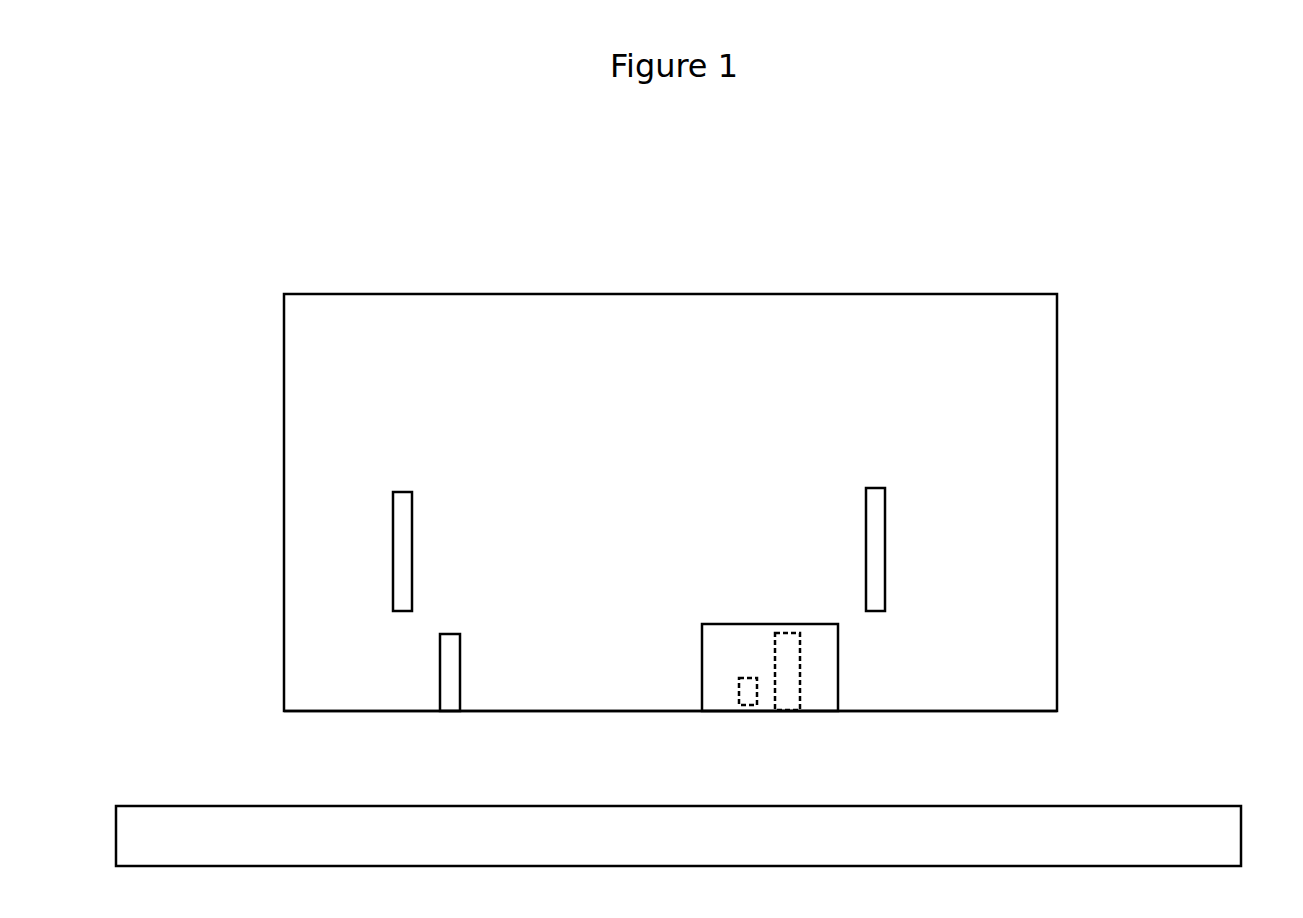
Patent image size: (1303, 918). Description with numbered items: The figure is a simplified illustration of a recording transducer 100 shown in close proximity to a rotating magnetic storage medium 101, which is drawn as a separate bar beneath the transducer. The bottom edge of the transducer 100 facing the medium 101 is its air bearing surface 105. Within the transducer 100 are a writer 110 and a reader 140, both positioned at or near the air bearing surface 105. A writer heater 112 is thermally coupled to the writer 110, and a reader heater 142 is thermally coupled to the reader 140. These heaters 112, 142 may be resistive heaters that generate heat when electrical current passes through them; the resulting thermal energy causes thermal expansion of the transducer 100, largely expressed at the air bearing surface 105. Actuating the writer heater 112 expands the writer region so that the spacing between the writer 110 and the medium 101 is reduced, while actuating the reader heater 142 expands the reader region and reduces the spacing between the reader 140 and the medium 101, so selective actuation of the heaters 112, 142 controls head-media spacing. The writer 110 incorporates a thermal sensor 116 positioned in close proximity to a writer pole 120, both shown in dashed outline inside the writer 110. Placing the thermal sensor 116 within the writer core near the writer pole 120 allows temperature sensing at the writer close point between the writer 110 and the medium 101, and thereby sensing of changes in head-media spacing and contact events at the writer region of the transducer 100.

The recording transducer 100 is at (576, 242).
The air bearing surface 105 is at (365, 735).
The rotating magnetic storage medium 101 is at (704, 850).
The writer 110 is at (732, 624).
The writer heater 112 is at (875, 488).
The thermal sensor 116 is at (739, 692).
The writer pole 120 is at (785, 633).
The reader 140 is at (461, 643).
The reader heater 142 is at (413, 528).